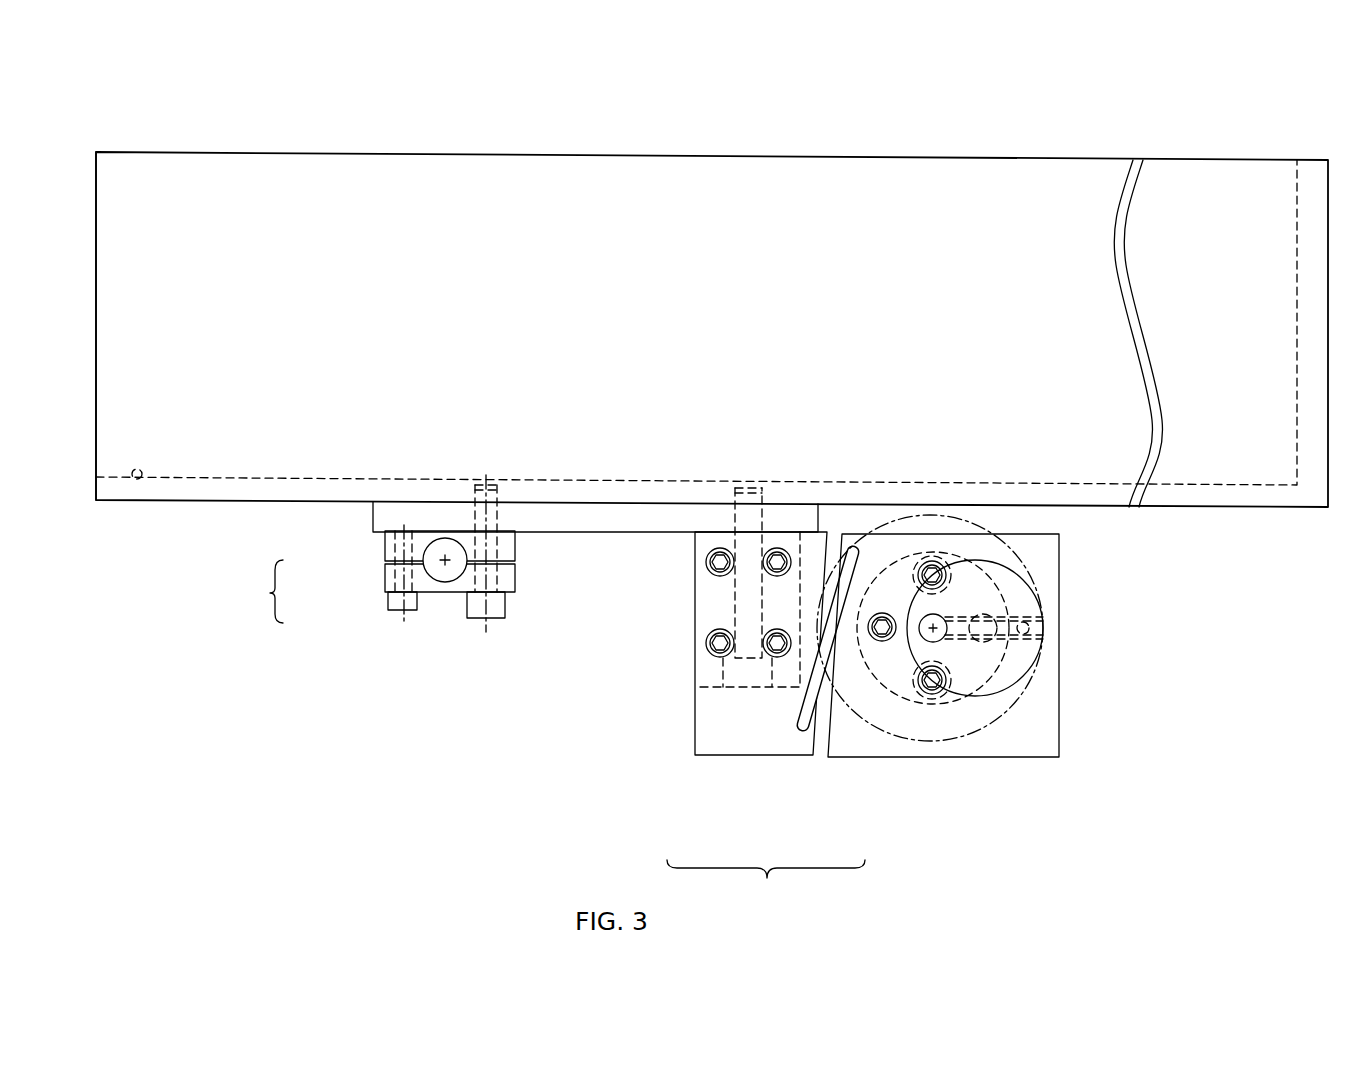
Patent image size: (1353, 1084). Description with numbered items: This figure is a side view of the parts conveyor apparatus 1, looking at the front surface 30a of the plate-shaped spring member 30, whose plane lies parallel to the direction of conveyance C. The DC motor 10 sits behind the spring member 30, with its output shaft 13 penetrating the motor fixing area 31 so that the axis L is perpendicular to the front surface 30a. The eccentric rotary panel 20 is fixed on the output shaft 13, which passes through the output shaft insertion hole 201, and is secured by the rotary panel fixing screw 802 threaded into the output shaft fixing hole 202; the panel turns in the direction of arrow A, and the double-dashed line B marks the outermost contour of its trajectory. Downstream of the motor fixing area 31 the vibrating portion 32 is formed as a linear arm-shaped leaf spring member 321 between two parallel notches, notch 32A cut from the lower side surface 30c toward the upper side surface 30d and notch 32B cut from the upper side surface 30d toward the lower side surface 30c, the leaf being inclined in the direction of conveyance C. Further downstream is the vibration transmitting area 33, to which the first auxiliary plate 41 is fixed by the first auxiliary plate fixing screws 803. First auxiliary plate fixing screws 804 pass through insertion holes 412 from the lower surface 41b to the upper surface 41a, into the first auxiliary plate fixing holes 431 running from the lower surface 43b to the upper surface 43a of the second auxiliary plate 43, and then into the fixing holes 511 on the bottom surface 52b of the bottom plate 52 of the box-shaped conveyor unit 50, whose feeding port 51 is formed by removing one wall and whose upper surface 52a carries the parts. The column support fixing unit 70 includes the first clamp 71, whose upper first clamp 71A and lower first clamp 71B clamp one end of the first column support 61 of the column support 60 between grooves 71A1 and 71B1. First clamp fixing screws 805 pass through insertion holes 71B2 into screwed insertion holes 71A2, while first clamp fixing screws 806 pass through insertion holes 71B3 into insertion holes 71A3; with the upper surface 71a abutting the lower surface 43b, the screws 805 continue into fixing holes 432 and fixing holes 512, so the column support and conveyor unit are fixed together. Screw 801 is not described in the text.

The parts conveyor apparatus 1 is at (890, 124).
The DC motor 10 is at (1008, 660).
The output shaft 13 is at (948, 585).
The rotary panel 20 is at (1040, 588).
The output shaft insertion hole 201 is at (935, 645).
The output shaft fixing hole 202 is at (1030, 633).
The spring member 30 is at (766, 885).
The front surface 30a is at (1045, 724).
The lower side surface 30c is at (1022, 758).
The upper side surface 30d is at (1040, 526).
The motor fixing area 31 is at (899, 758).
The vibrating portion 32 is at (766, 825).
The leaf spring member 321 is at (763, 851).
The notch 32A is at (862, 750).
The notch 32B is at (750, 677).
The vibration transmitting area 33 is at (733, 730).
The first auxiliary plate 41 is at (698, 688).
The upper surface 41a is at (695, 535).
The lower surface 41b is at (745, 688).
The insertion holes 412 is at (733, 617).
The second auxiliary plate 43 is at (555, 532).
The upper surface 43a is at (648, 503).
The lower surface 43b is at (600, 532).
The first auxiliary plate fixing holes 431 is at (765, 530).
The fixing holes 432 is at (503, 500).
The conveyor unit 50 is at (1025, 158).
The feeding port 51 is at (96, 196).
The fixing holes 511 is at (764, 490).
The fixing holes 512 is at (493, 485).
The bottom plate 52 is at (255, 492).
The upper surface 52a is at (133, 479).
The bottom surface 52b is at (193, 503).
The column support 60 is at (457, 708).
The first column support 61 is at (453, 582).
The column support fixing unit 70 is at (226, 596).
The first clamp 71 is at (260, 591).
The upper surface 71a is at (420, 531).
The upper first clamp 71A is at (385, 552).
The groove 71A1 is at (458, 531).
The insertion holes 71A2 is at (518, 553).
The insertion holes 71A3 is at (385, 547).
The lower first clamp 71B is at (385, 574).
The groove 71B1 is at (436, 585).
The insertion holes 71B2 is at (516, 596).
The insertion holes 71B3 is at (386, 574).
The screw 801 is at (882, 642).
The rotary panel fixing screw 802 is at (1040, 612).
The first auxiliary plate fixing screws 803 is at (720, 545).
The first auxiliary plate fixing screws 804 is at (795, 730).
The first clamp fixing screws 805 is at (497, 612).
The first clamp fixing screws 806 is at (408, 604).
The arrow A is at (886, 542).
The double-dashed line B is at (948, 515).
The direction of conveyance C is at (236, 318).
The axis L is at (965, 700).